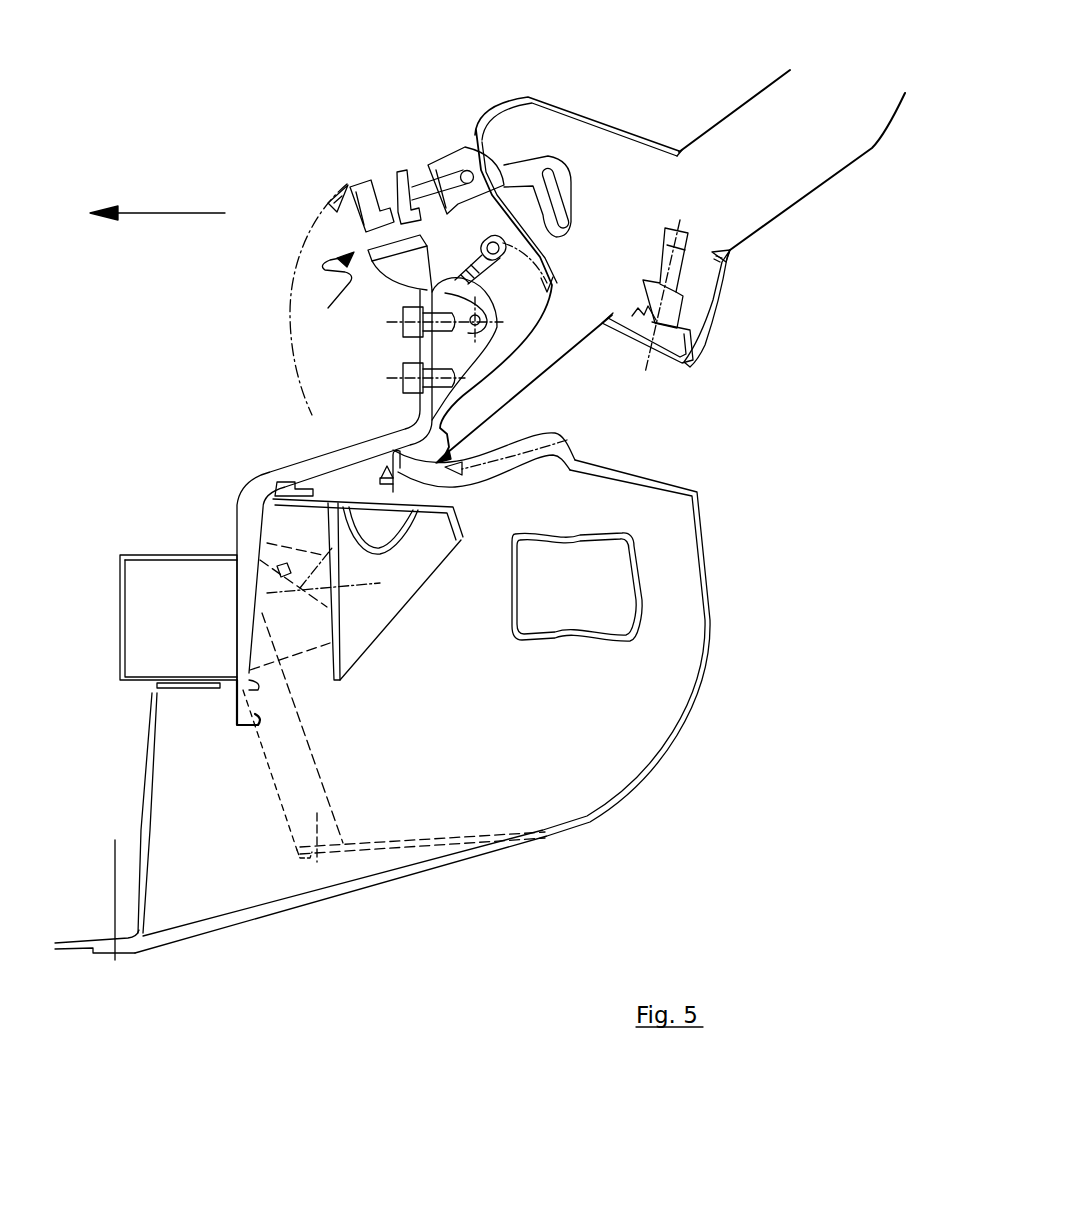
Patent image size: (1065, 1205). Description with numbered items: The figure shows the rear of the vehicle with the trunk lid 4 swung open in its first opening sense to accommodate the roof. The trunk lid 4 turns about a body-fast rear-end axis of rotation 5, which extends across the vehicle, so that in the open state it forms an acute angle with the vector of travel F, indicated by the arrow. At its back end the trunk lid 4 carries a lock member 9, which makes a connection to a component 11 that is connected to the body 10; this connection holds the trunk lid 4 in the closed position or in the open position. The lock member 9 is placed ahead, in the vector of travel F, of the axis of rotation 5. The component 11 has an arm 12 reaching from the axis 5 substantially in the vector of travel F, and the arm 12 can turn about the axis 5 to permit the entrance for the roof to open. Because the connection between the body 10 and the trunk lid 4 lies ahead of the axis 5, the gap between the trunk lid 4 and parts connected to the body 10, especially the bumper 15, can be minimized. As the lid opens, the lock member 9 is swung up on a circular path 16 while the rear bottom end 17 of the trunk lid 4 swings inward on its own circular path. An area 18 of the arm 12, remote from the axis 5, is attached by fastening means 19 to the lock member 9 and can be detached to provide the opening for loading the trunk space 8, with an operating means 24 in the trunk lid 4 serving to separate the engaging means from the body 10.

The trunk lid 4 is at (765, 180).
The axis of rotation 5 is at (475, 320).
The trunk space 8 is at (225, 64).
The lock member 9 is at (457, 152).
The body 10 is at (323, 460).
The component 11 is at (330, 293).
The arm 12 is at (395, 285).
The bumper 15 is at (678, 557).
The circular path 16 is at (290, 313).
The rear bottom end 17 is at (557, 433).
The area 18 is at (367, 176).
The fastening means 19 is at (418, 170).
The operating means 24 is at (560, 190).
The vector of travel F is at (163, 213).